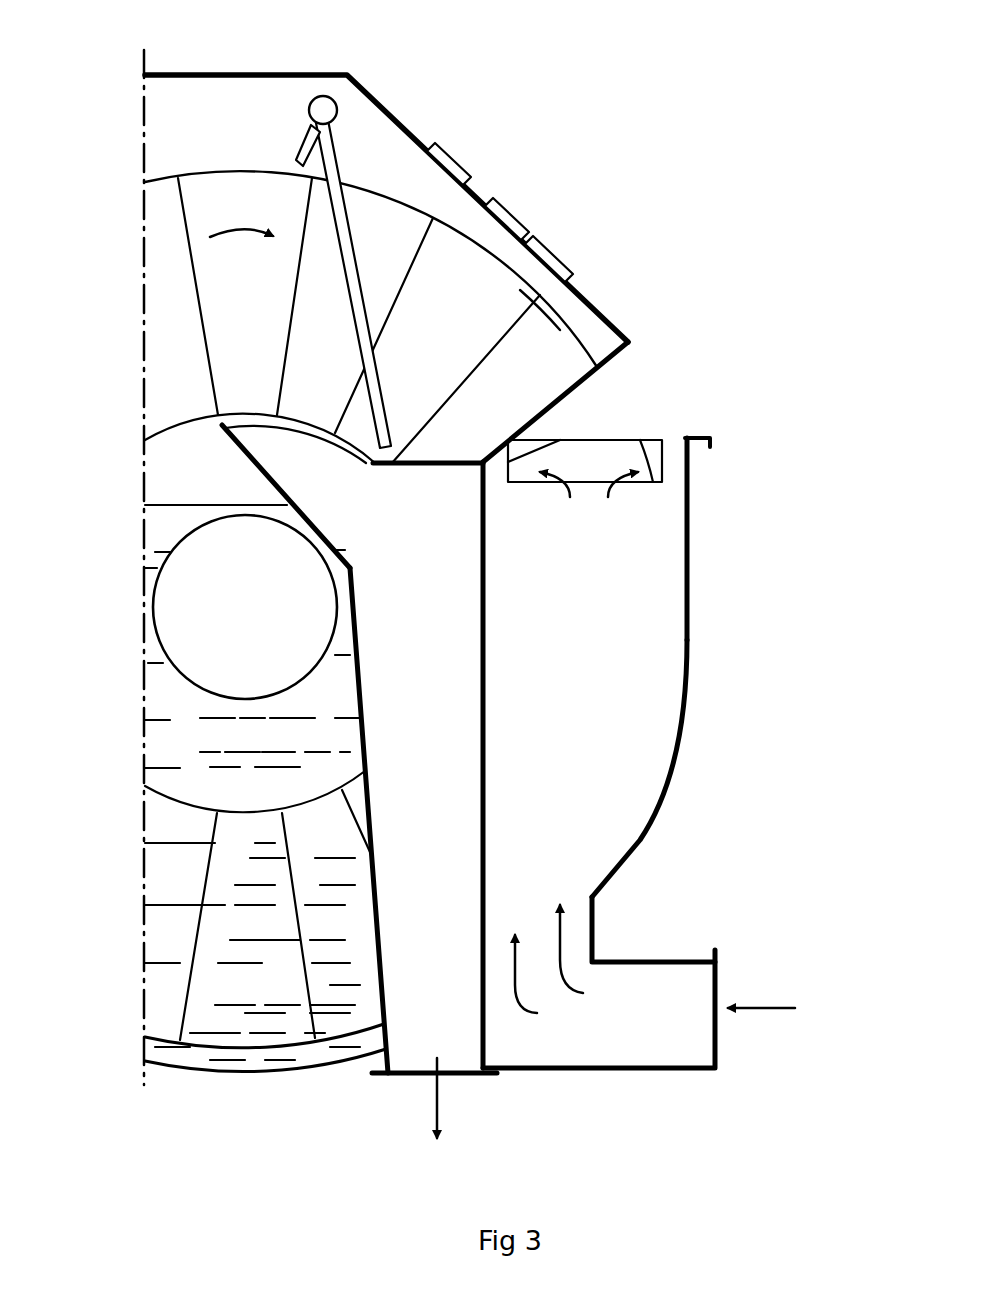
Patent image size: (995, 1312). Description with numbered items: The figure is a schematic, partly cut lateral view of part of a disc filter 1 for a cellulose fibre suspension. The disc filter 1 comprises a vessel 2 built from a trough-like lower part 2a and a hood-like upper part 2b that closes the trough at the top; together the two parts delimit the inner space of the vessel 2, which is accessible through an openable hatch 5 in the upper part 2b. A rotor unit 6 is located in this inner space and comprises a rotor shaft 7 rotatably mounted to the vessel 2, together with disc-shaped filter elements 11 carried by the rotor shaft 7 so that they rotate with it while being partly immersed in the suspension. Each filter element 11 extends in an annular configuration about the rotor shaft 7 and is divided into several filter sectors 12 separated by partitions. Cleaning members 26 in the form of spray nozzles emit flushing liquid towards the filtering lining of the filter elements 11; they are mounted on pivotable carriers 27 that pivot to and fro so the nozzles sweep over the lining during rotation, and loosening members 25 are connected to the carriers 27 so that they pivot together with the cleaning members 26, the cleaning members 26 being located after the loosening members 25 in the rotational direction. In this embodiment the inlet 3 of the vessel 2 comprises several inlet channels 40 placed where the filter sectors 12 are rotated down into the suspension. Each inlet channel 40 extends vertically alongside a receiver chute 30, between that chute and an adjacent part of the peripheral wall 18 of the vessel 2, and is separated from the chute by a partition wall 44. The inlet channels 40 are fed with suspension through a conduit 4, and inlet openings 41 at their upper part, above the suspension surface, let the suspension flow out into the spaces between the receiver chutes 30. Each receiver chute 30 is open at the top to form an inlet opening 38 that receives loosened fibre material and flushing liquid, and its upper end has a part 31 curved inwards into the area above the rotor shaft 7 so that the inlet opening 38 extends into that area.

The disc filter 1 is at (614, 250).
The vessel 2 is at (214, 1080).
The lower part 2a is at (268, 1079).
The upper part 2b is at (378, 96).
The inlet 3 is at (662, 864).
The conduit 4 is at (665, 958).
The openable hatch 5 is at (466, 172).
The rotor unit 6 is at (270, 158).
The rotor shaft 7 is at (153, 622).
The filter element 11 is at (590, 336).
The filter sector 12 is at (513, 273).
The peripheral wall 18 is at (680, 745).
The loosening member 25 is at (294, 126).
The cleaning member 26 is at (360, 408).
The pivotable carrier 27 is at (356, 272).
The receiver chute 30 is at (485, 800).
The part curved inwards 31 is at (248, 455).
The inlet opening 38 is at (432, 458).
The inlet channel 40 is at (689, 585).
The inlet opening 41 is at (600, 440).
The partition wall 44 is at (487, 695).